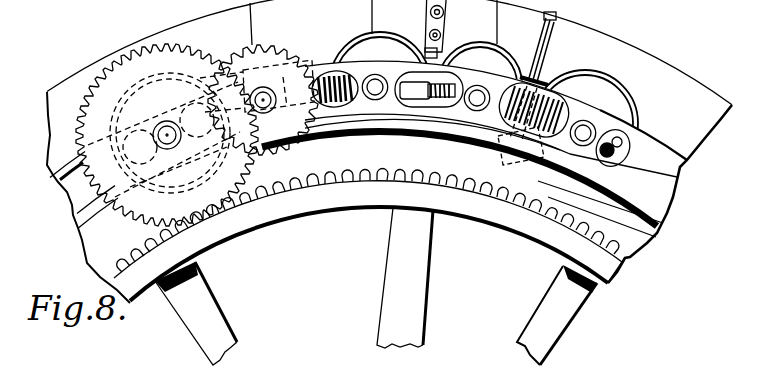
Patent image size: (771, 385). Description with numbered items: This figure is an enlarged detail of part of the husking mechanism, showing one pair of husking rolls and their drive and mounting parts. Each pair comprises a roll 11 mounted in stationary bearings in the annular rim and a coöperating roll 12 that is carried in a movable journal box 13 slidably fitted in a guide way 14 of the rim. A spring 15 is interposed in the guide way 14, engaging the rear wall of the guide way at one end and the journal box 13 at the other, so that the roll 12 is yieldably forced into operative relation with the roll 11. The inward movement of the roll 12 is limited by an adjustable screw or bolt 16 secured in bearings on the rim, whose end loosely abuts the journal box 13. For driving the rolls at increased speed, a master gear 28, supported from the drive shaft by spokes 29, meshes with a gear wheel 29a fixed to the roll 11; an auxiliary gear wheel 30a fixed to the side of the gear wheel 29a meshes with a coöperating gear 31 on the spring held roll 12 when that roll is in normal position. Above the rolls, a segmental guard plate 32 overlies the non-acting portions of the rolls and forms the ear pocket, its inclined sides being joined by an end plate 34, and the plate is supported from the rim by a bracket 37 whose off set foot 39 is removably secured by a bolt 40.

The roll 11 is at (490, 153).
The coöperating roll 12 is at (472, 148).
The movable journal box 13 is at (401, 104).
The guide way 14 is at (73, 182).
The spring 15 is at (332, 112).
The adjustable screw or bolt 16 is at (388, 120).
The master gear 28 is at (357, 200).
The spokes 29 is at (210, 322).
The gear wheel 29a is at (167, 135).
The auxiliary gear wheel 30a is at (213, 152).
The coöperating gear 31 is at (285, 150).
The guard plate 32 is at (469, 91).
The end plate 34 is at (499, 15).
The bracket 37 is at (425, 4).
The off set foot 39 is at (423, 53).
The bolt 40 is at (442, 62).